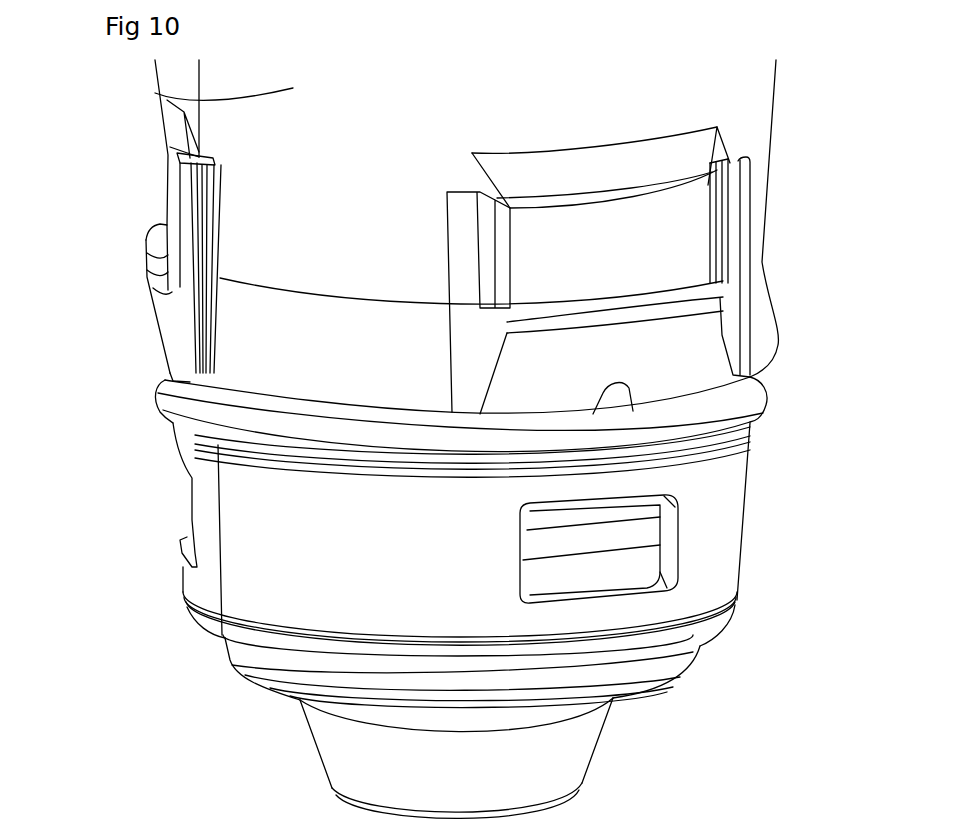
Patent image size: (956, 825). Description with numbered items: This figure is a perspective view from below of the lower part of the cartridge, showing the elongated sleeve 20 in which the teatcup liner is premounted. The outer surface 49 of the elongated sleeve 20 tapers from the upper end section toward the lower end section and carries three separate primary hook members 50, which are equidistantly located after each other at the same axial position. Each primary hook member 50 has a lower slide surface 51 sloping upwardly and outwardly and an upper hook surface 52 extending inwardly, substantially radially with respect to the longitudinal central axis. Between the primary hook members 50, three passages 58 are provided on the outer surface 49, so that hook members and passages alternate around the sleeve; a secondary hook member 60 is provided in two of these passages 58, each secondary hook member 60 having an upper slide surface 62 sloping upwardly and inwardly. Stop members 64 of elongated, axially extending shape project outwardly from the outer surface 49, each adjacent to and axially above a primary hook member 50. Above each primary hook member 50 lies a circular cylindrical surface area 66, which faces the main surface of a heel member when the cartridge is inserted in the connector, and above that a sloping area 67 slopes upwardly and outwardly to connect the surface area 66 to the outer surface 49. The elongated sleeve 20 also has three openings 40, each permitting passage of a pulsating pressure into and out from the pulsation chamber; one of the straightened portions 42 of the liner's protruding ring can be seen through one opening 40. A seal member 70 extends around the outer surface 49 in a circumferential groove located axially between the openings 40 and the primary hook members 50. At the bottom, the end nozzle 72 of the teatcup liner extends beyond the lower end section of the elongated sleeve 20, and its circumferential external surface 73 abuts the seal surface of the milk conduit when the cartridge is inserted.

The elongated sleeve 20 is at (777, 119).
The opening 40 is at (187, 518).
The straightened portion 42 is at (585, 540).
The outer surface 49 is at (175, 110).
The primary hook member 50 is at (139, 264).
The lower slide surface 51 is at (158, 311).
The upper hook surface 52 is at (145, 226).
The passage 58 is at (331, 260).
The secondary hook member 60 is at (247, 387).
The upper slide surface 62 is at (252, 348).
The stop member 64 is at (187, 200).
The surface area 66 is at (607, 267).
The sloping area 67 is at (632, 163).
The seal member 70 is at (160, 412).
The end nozzle 72 is at (300, 713).
The circumferential external surface 73 is at (347, 748).